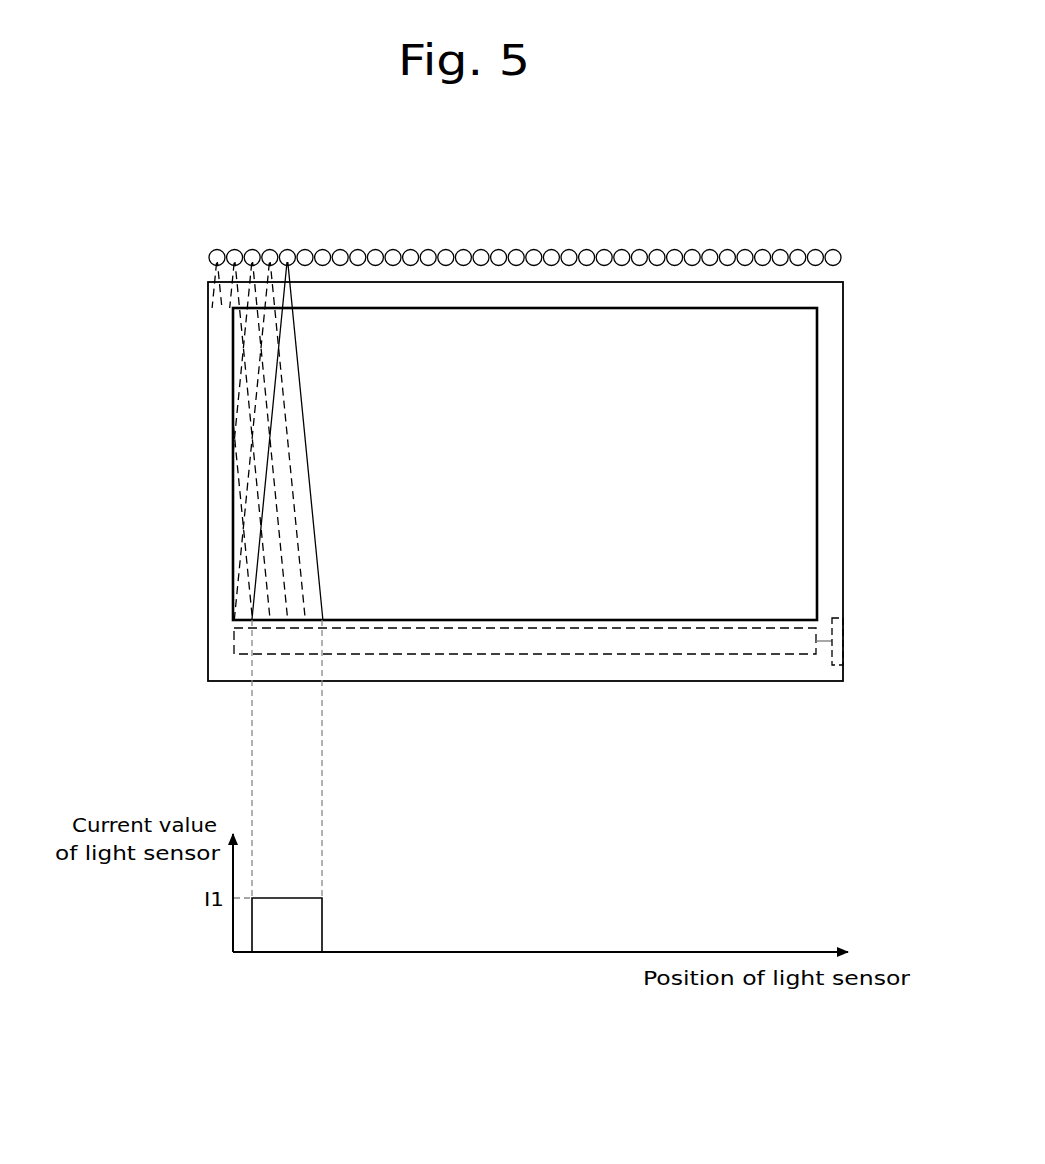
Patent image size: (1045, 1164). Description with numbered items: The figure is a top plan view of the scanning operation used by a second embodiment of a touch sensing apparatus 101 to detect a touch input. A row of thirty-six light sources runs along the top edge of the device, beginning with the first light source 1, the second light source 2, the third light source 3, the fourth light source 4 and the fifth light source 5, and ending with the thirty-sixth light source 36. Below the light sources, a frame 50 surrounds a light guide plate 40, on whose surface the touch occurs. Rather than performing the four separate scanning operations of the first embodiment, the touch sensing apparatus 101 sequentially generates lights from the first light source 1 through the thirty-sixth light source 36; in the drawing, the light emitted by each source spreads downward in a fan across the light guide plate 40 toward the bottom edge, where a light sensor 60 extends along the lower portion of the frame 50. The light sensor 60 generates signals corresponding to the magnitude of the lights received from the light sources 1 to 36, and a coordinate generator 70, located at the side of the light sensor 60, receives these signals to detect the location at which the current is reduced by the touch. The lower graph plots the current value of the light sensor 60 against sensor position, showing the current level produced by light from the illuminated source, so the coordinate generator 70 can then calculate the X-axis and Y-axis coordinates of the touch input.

The first light source 1 is at (217, 249).
The second light source 2 is at (235, 249).
The third light source 3 is at (252, 249).
The fourth light source 4 is at (270, 249).
The fifth light source 5 is at (287, 249).
The thirty-sixth light source 36 is at (833, 249).
The touch sensing apparatus 101 is at (866, 257).
The frame 50 is at (832, 400).
The light guide plate 40 is at (818, 479).
The light sensor 60 is at (700, 655).
The coordinate generator 70 is at (835, 618).